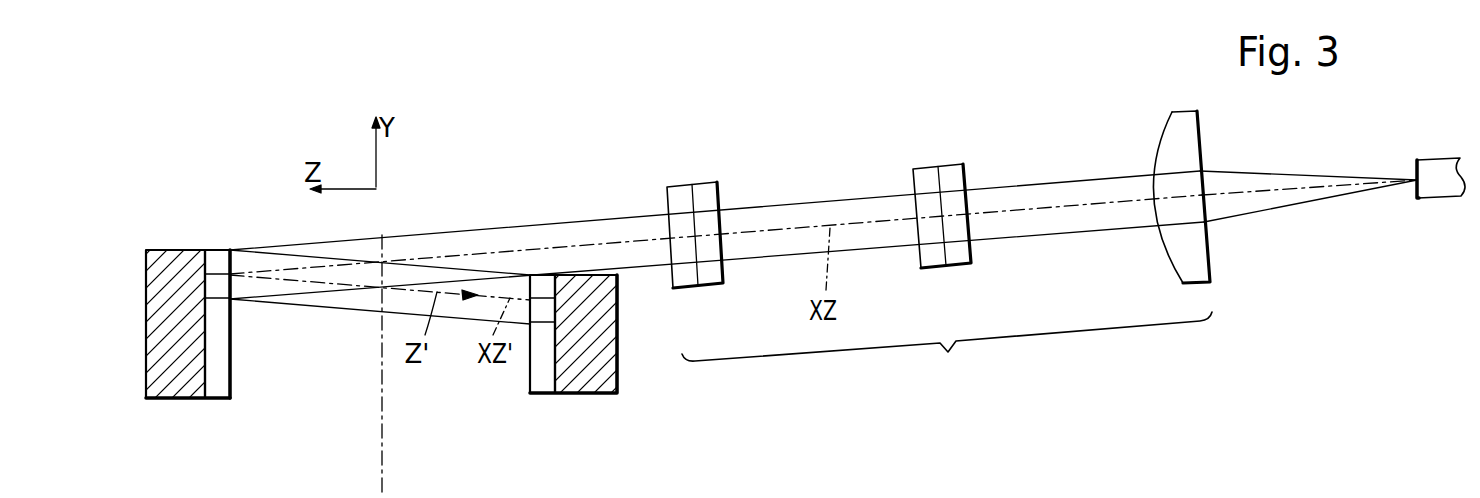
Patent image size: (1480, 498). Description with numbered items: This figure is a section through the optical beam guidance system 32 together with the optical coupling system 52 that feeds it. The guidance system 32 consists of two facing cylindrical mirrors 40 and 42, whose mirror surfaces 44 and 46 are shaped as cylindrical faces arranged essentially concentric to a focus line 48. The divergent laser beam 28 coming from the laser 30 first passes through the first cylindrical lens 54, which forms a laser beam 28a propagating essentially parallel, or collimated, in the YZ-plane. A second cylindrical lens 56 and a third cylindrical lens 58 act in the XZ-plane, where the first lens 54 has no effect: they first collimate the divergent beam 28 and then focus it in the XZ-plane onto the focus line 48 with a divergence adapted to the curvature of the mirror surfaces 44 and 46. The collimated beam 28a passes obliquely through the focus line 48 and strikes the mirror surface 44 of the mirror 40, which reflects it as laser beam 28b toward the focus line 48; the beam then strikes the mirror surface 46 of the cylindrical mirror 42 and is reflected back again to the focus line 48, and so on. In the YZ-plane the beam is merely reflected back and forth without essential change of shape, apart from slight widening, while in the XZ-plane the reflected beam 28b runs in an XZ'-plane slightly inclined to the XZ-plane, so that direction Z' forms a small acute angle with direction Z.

The laser beam 28 is at (1309, 202).
The laser beam propagating essentially parallel in the YZ-plane 28a is at (569, 222).
The reflected laser beam 28b is at (332, 307).
The laser 30 is at (1437, 192).
The optical beam guidance system 32 is at (458, 206).
The cylindrical mirror 40 is at (165, 394).
The cylindrical mirror 42 is at (593, 385).
The mirror surface 44 is at (220, 377).
The mirror surface 46 is at (545, 377).
The focus line 48 is at (378, 465).
The optical coupling system 52 is at (947, 352).
The first cylindrical lens 54 is at (1183, 265).
The second cylindrical lens 56 is at (935, 258).
The third cylindrical lens 58 is at (708, 278).